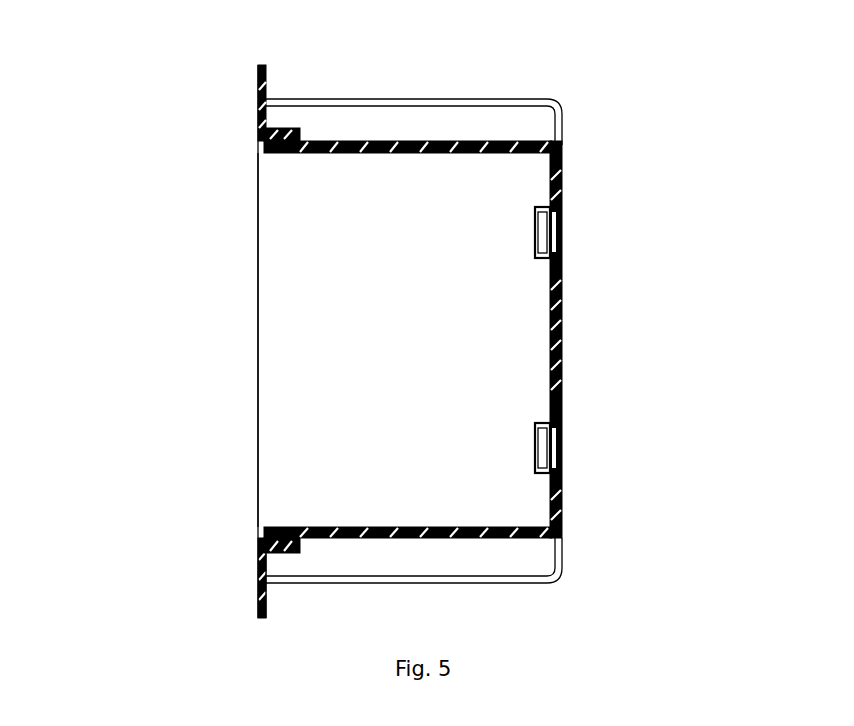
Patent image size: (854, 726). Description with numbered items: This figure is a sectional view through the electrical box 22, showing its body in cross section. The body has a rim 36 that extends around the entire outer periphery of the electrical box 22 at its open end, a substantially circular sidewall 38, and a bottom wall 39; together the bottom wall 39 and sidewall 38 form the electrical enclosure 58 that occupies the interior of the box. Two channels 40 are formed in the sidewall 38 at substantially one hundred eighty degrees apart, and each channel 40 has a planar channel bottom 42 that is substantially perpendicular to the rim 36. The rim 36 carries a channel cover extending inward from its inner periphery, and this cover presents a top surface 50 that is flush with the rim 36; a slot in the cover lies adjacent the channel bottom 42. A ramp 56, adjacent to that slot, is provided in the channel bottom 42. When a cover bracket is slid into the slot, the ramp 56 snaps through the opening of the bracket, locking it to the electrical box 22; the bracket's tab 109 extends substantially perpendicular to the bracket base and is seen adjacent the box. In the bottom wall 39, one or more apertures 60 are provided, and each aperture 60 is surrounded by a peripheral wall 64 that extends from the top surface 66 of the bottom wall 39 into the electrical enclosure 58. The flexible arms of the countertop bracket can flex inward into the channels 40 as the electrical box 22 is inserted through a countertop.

The electrical box 22 is at (121, 149).
The rim 36 is at (258, 612).
The sidewall 38 is at (405, 155).
The bottom wall 39 is at (562, 338).
The channel 40 is at (460, 128).
The channel bottom 42 is at (434, 539).
The top surface 50 is at (258, 569).
The ramp 56 is at (315, 141).
The electrical enclosure 58 is at (315, 350).
The aperture 60 is at (562, 232).
The peripheral wall 64 is at (548, 258).
The top surface 66 is at (550, 405).
The tab 109 is at (262, 105).